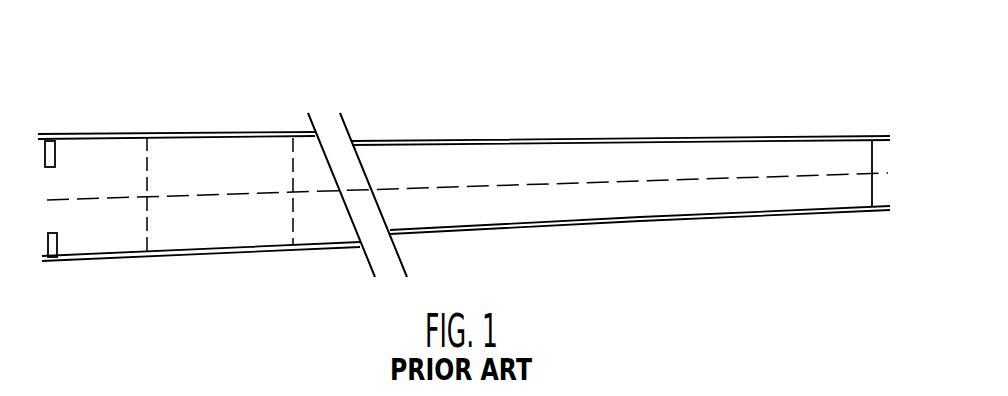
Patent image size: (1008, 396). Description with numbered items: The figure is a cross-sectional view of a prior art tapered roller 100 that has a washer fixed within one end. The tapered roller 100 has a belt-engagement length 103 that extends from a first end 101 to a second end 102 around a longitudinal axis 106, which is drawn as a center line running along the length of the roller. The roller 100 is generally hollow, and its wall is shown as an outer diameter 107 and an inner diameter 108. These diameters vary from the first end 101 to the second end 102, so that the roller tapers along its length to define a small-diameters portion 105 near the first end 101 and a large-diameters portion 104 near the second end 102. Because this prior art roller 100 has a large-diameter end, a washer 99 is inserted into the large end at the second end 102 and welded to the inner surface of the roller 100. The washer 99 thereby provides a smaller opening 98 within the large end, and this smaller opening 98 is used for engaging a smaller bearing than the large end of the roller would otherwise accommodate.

The tapered roller 100 is at (405, 112).
The first end 101 is at (890, 138).
The second end 102 is at (43, 135).
The smaller opening 98 is at (52, 215).
The washer 99 is at (55, 157).
The belt-engagement length 103 is at (475, 138).
The large-diameters portion 104 is at (248, 252).
The small-diameters portion 105 is at (675, 222).
The longitudinal axis 106 is at (570, 183).
The outer diameter 107 is at (148, 168).
The inner diameter 108 is at (290, 167).